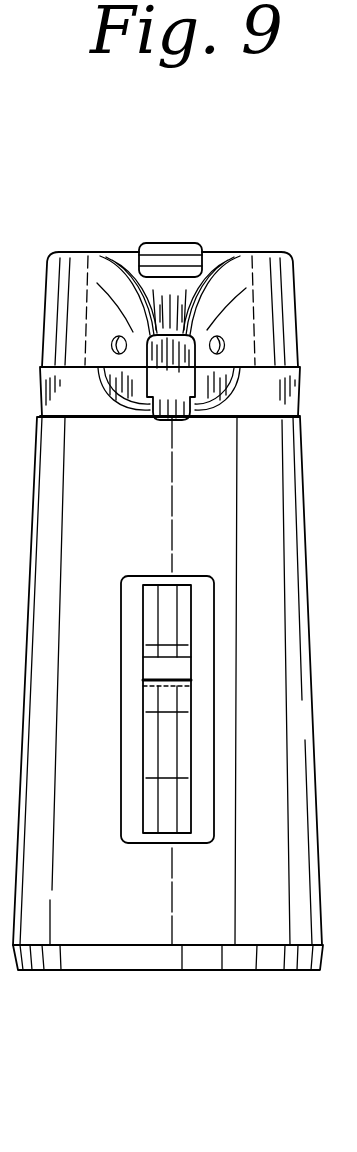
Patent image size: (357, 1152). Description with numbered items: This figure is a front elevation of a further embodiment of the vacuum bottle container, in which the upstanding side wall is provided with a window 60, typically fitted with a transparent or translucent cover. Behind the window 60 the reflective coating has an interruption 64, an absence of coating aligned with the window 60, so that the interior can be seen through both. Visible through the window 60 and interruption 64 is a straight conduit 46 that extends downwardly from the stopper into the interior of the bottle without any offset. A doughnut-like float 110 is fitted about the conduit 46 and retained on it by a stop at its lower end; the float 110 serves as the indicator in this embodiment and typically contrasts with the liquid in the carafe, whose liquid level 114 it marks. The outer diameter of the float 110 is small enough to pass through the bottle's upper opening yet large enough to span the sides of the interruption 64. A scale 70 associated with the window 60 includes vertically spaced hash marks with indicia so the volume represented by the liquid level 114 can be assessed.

The conduit 46 is at (163, 607).
The window 60 is at (232, 614).
The interruption 64 is at (188, 600).
The scale 70 is at (141, 729).
The float 110 is at (158, 672).
The liquid level 114 is at (143, 683).